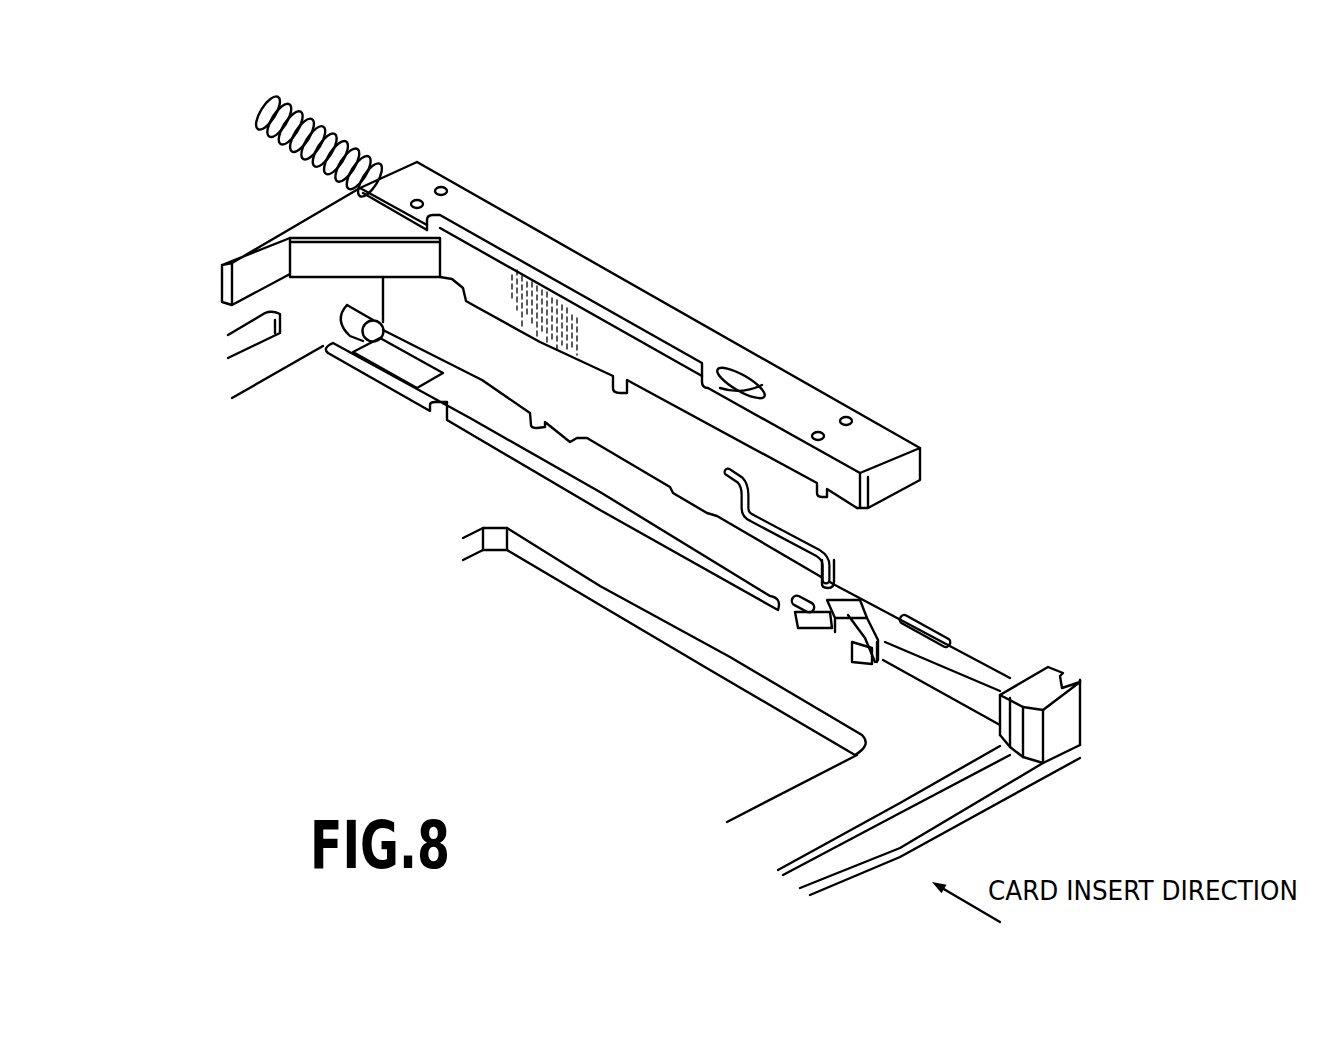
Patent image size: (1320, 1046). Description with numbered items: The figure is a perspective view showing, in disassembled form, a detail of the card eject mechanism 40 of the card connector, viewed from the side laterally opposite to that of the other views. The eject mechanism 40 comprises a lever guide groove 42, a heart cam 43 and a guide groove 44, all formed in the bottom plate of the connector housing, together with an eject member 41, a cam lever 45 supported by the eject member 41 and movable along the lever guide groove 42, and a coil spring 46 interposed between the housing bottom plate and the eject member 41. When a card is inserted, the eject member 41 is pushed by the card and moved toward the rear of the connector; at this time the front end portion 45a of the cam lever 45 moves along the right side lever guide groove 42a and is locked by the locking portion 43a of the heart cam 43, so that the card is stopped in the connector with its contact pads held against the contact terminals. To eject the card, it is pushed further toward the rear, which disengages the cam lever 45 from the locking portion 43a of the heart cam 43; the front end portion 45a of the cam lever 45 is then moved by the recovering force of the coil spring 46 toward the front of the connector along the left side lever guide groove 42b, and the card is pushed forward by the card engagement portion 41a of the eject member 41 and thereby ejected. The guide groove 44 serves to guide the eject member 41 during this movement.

The eject mechanism 40 is at (590, 220).
The eject member 41 is at (703, 347).
The card engagement portion 41a is at (257, 272).
The lever guide groove 42 is at (943, 638).
The right side lever guide groove 42a is at (860, 612).
The left side lever guide groove 42b is at (828, 643).
The heart cam 43 is at (880, 660).
The locking portion 43a is at (830, 628).
The guide groove 44 is at (562, 485).
The cam lever 45 is at (803, 540).
The front end portion 45a is at (837, 578).
The coil spring 46 is at (335, 123).